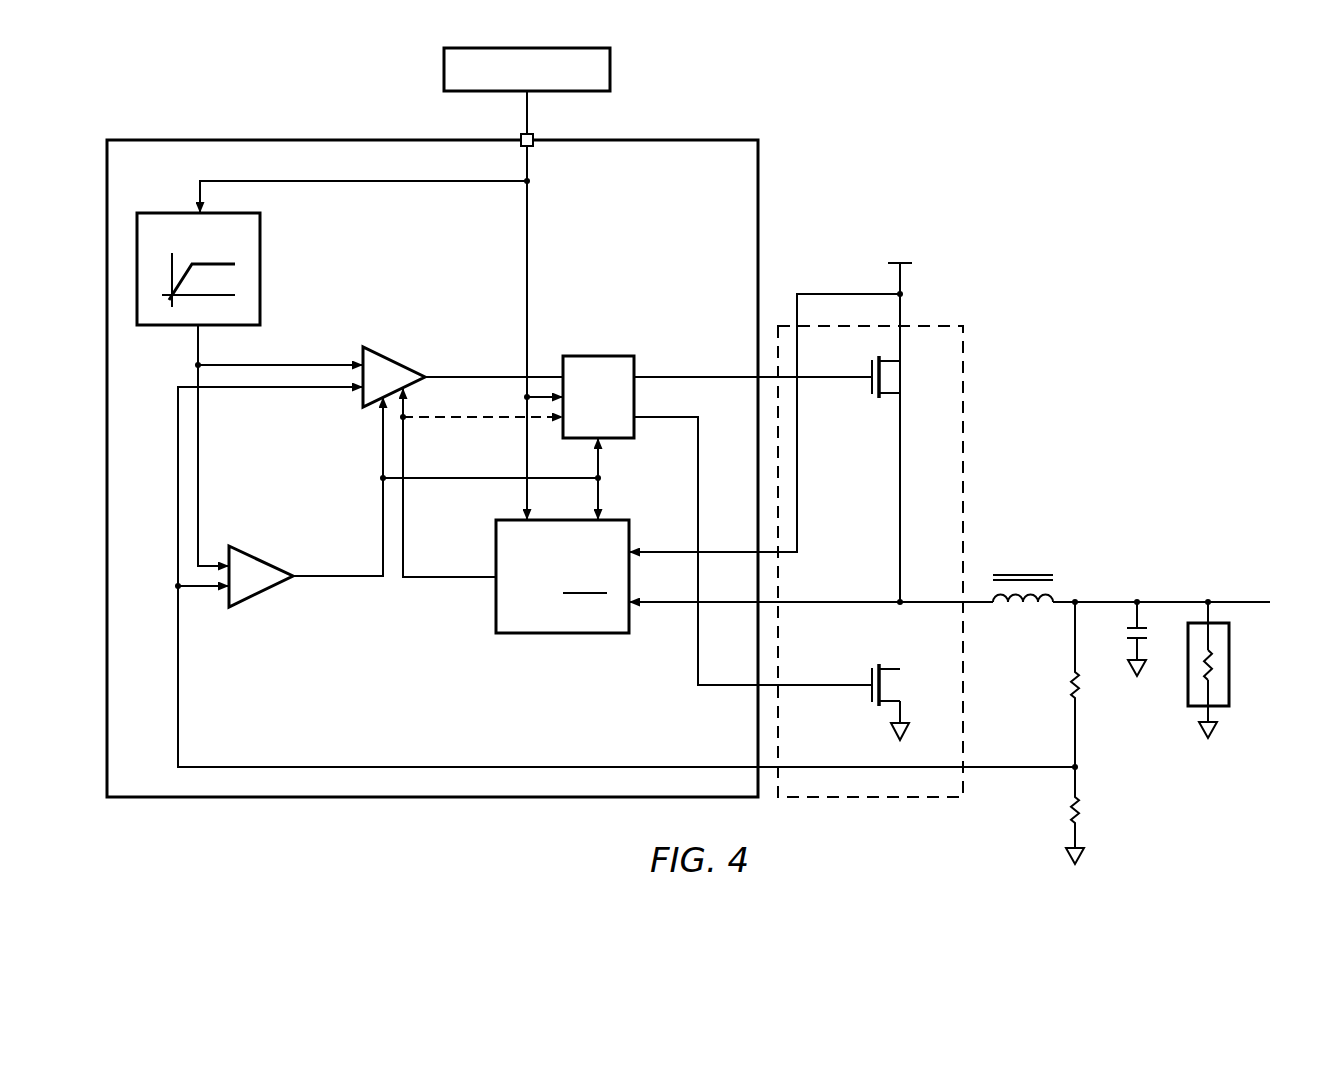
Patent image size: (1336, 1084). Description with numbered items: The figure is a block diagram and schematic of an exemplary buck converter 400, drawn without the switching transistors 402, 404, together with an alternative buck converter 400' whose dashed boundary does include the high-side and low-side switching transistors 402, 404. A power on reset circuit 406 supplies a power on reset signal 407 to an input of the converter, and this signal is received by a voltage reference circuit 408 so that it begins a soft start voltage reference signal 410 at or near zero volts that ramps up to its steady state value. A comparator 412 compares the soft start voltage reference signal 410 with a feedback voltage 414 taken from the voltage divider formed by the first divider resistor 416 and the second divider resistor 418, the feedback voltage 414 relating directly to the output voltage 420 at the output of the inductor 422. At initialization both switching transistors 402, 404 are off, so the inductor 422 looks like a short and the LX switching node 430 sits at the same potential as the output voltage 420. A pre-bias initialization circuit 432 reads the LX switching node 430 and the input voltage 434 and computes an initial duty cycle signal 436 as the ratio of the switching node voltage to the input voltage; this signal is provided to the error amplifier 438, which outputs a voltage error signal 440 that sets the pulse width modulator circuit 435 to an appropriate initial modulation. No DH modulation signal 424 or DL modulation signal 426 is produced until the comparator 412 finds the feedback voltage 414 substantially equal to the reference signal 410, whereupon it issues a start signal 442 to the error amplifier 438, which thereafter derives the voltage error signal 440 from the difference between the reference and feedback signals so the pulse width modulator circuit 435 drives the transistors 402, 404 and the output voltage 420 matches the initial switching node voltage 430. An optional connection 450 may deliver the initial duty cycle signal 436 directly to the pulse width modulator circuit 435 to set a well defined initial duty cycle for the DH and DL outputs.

The buck converter 400 is at (432, 439).
The buck converter 400' is at (914, 561).
The switching transistor Q1 402 is at (868, 392).
The switching transistor Q2 404 is at (868, 700).
The power on reset circuit 406 is at (443, 66).
The power on reset signal 407 is at (521, 108).
The voltage reference circuit 408 is at (180, 212).
The soft start voltage reference signal 410 is at (197, 350).
The comparator 412 is at (263, 561).
The feedback voltage 414 is at (393, 765).
The resistor R1 416 is at (1068, 684).
The resistor R2 418 is at (1068, 808).
The output voltage VOUT 420 is at (1250, 600).
The inductor 422 is at (1041, 573).
The DH modulation signal 424 is at (704, 375).
The DL modulation signal 426 is at (732, 687).
The LX switching node 430 is at (905, 607).
The pre-bias initialization circuit 432 is at (553, 634).
The input voltage VIN 434 is at (905, 282).
The pulse width modulator circuit 435 is at (606, 355).
The initial duty cycle signal 436 is at (437, 580).
The error amplifier 438 is at (388, 355).
The voltage error signal 440 is at (484, 375).
The start signal 442 is at (342, 580).
The optional connection 450 is at (470, 425).